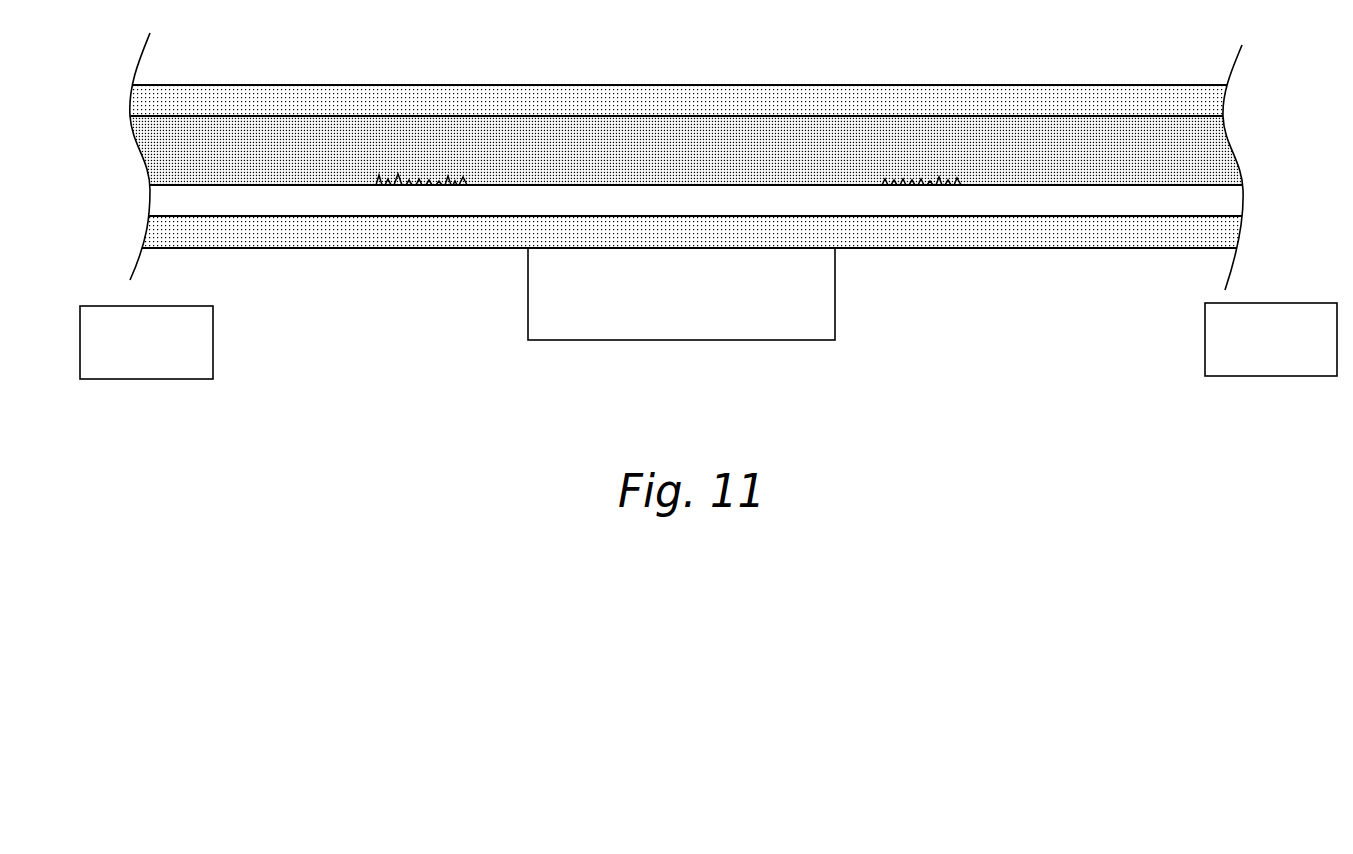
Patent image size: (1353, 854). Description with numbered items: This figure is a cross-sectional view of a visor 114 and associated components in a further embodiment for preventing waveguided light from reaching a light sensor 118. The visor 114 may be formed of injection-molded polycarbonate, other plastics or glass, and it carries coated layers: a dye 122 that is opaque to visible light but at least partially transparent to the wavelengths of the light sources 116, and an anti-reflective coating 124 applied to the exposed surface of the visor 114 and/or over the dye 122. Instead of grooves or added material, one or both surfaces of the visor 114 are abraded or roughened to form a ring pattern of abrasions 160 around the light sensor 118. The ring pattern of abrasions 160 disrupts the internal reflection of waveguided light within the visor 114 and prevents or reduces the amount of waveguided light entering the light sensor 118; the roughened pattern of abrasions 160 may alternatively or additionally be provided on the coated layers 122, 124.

The visor 114 is at (770, 143).
The light source 116 is at (164, 353).
The light sensor 118 is at (700, 305).
The dye 122 is at (842, 205).
The anti-reflective coating 124 is at (648, 106).
The ring pattern of abrasions 160 is at (402, 178).